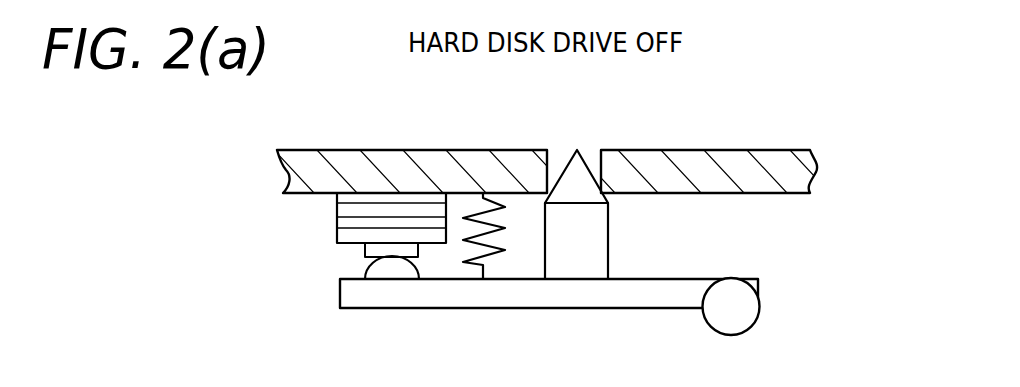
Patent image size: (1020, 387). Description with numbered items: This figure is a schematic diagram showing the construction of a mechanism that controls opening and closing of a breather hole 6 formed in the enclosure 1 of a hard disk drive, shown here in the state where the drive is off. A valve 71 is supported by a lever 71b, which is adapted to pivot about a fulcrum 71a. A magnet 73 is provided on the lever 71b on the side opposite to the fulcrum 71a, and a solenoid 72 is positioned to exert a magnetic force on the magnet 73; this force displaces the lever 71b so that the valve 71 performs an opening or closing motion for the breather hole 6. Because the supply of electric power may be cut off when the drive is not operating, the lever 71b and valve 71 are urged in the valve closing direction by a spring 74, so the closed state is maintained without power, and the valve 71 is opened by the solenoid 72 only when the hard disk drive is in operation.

The enclosure 1 is at (697, 166).
The breather hole 6 is at (593, 156).
The valve 71 is at (572, 187).
The fulcrum 71a is at (744, 316).
The lever 71b is at (645, 288).
The solenoid 72 is at (375, 208).
The magnet 73 is at (393, 273).
The spring 74 is at (493, 253).